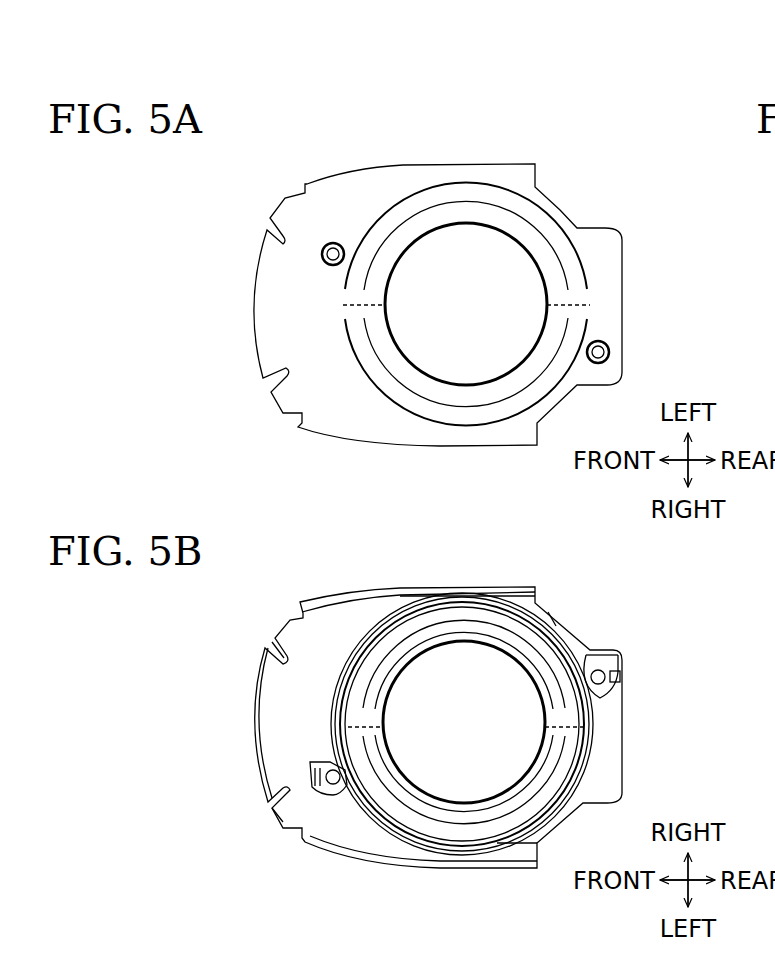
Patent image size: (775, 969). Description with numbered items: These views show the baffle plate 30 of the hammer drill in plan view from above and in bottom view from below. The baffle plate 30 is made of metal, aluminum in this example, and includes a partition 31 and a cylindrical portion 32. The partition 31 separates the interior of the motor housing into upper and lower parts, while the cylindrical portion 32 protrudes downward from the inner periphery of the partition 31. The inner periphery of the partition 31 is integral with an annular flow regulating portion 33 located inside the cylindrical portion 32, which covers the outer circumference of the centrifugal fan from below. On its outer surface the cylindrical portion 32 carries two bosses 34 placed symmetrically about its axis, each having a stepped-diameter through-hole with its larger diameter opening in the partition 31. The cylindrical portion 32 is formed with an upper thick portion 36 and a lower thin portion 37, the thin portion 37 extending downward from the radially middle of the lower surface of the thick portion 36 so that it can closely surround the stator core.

In FIG. 5A, the baffle plate 30 is at (568, 150).
In FIG. 5B, the baffle plate 30 is at (565, 580).
In FIG. 5A, the partition 31 is at (345, 186).
In FIG. 5B, the partition 31 is at (353, 604).
In FIG. 5B, the cylindrical portion 32 is at (481, 590).
In FIG. 5A, the flow regulating portion 33 is at (456, 222).
In FIG. 5B, the flow regulating portion 33 is at (432, 612).
In FIG. 5A, the boss 34 is at (333, 243).
In FIG. 5B, the boss 34 is at (310, 776).
In FIG. 5B, the thick portion 36 is at (516, 600).
In FIG. 5B, the thin portion 37 is at (558, 637).